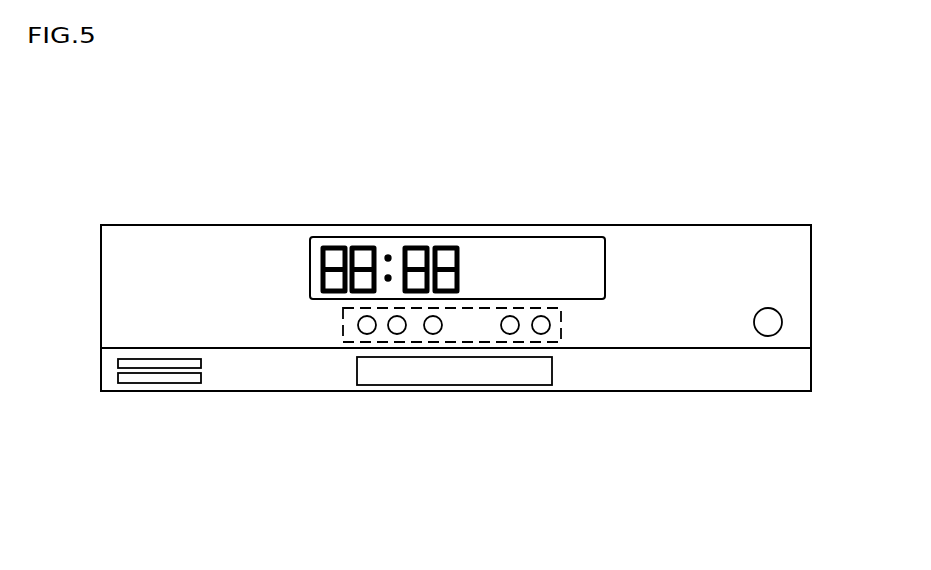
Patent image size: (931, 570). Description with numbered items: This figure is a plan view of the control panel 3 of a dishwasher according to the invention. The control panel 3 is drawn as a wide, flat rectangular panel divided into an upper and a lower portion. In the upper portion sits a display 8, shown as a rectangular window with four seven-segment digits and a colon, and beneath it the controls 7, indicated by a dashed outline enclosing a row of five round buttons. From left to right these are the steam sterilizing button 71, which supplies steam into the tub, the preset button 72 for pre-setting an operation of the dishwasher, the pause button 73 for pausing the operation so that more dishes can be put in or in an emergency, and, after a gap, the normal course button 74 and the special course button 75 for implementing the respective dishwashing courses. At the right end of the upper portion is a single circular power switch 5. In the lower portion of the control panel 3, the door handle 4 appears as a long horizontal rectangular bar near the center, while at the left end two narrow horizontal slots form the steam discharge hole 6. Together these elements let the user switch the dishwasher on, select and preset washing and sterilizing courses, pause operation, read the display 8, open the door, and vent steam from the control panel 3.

The control panel 3 is at (665, 240).
The door handle 4 is at (483, 375).
The power switch 5 is at (770, 321).
The steam discharge hole 6 is at (171, 380).
The controls 7 is at (343, 325).
The steam sterilizing button 71 is at (371, 332).
The preset button 72 is at (401, 332).
The pause button 73 is at (437, 332).
The normal course button 74 is at (515, 332).
The special course button 75 is at (547, 332).
The display 8 is at (430, 245).